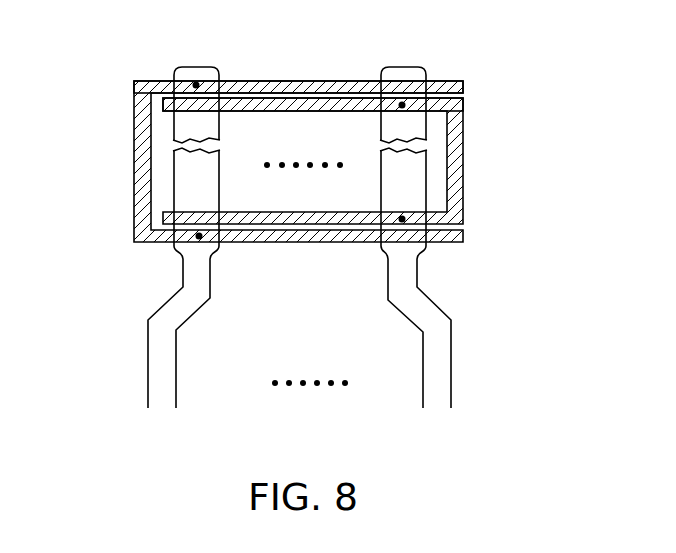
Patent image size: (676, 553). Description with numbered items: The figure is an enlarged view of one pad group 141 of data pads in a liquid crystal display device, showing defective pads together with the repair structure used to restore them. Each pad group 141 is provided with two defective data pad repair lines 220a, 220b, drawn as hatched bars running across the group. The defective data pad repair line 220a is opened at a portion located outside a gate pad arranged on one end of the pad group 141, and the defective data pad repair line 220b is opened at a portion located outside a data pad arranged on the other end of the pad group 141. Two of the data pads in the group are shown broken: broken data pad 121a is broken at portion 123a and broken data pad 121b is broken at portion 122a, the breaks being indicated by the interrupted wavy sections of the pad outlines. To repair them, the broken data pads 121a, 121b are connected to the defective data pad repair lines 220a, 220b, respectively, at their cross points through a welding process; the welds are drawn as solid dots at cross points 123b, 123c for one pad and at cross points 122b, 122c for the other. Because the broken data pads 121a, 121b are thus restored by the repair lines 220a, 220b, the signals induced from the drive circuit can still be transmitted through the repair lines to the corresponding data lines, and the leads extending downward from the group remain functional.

The pad group 141 is at (471, 81).
The broken data pad 121a is at (427, 194).
The broken data pad 121b is at (180, 172).
The defective data pad repair line 220a is at (255, 106).
The defective data pad repair line 220b is at (312, 92).
The broken portion 122a is at (405, 141).
The cross point 122b is at (402, 104).
The cross point 122c is at (402, 219).
The broken portion 123a is at (177, 142).
The cross point 123b is at (196, 84).
The cross point 123c is at (199, 236).